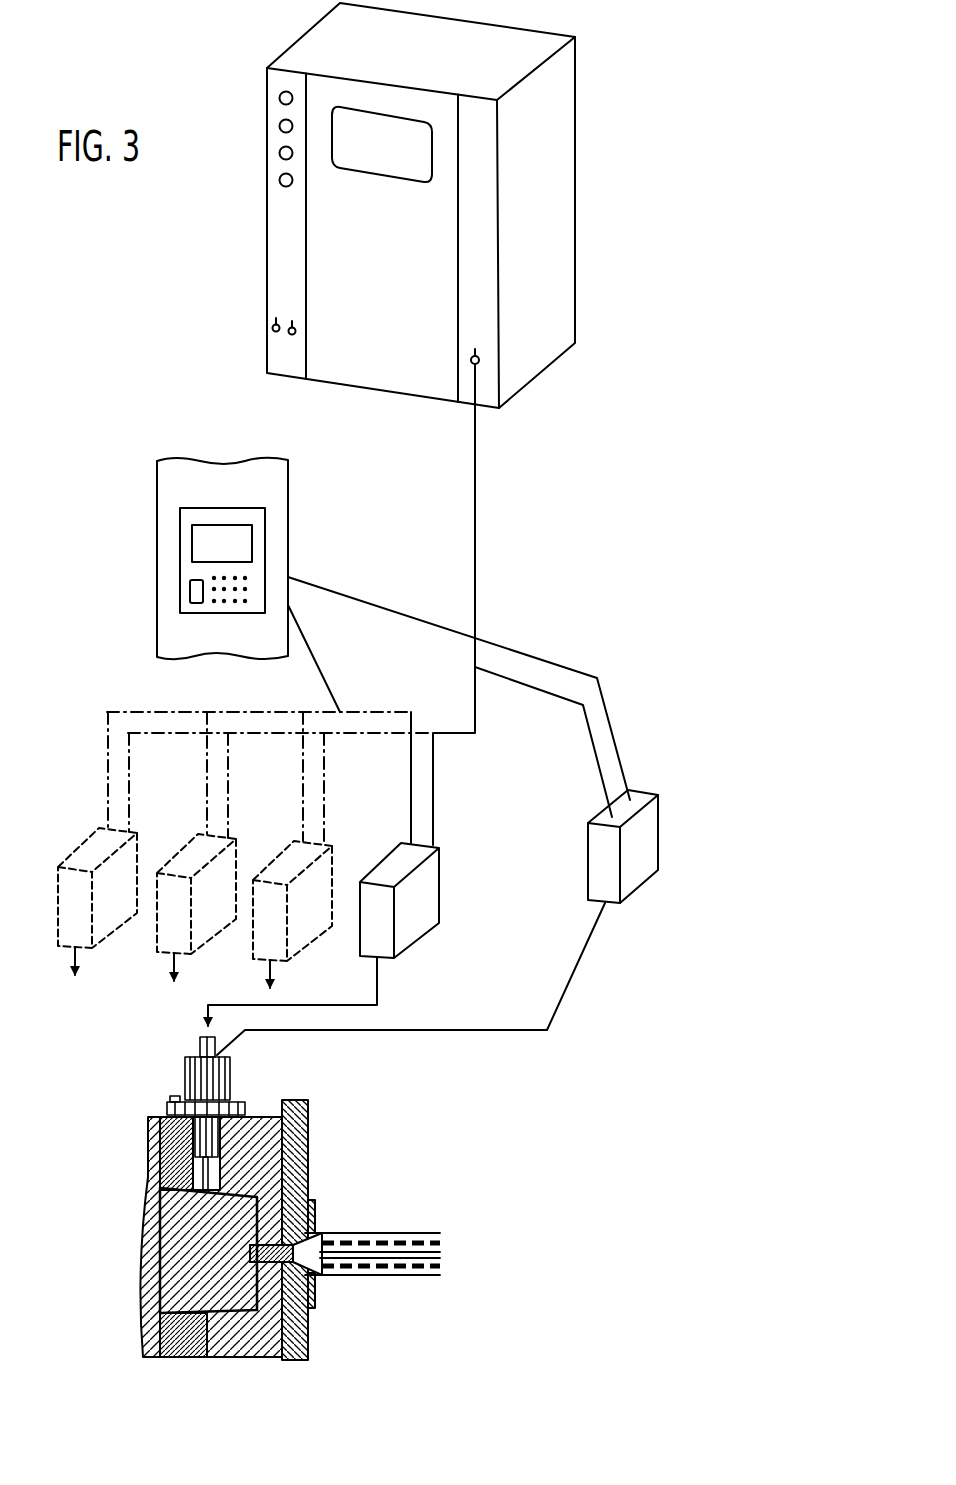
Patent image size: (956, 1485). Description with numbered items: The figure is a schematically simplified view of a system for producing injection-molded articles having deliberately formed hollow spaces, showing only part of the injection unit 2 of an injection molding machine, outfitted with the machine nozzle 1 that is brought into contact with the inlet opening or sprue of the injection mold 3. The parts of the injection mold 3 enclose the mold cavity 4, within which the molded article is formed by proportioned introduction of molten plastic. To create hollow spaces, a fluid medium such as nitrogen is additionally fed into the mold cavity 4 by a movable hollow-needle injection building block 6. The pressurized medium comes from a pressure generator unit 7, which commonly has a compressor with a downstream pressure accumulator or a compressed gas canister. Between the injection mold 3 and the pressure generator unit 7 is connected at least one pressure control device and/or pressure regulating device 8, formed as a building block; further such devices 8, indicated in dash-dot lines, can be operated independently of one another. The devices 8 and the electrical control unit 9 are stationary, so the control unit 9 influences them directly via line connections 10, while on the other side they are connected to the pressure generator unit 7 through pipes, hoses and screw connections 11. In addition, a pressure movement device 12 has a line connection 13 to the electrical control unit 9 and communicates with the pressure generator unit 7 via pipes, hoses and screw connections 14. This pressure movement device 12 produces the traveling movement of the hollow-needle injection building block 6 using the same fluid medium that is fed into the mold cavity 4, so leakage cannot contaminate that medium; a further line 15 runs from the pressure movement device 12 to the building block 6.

The machine nozzle 1 is at (308, 1273).
The injection unit 2 is at (412, 1281).
The injection mold 3 is at (126, 1186).
The mold cavity 4 is at (212, 1197).
The movable hollow-needle injection building block 6 is at (195, 1160).
The pressure generator unit 7 is at (543, 225).
The pressure control device and/or pressure regulating device 8 is at (112, 920).
The electrical control unit 9 is at (288, 557).
The line connections 10 is at (320, 668).
The pipes, hoses and screw connections 11 is at (475, 617).
The pressure movement device 12 is at (640, 840).
The line connection 13 is at (615, 730).
The pipes, hoses and screw connections 14 is at (597, 763).
The sensor line 15 is at (555, 1005).